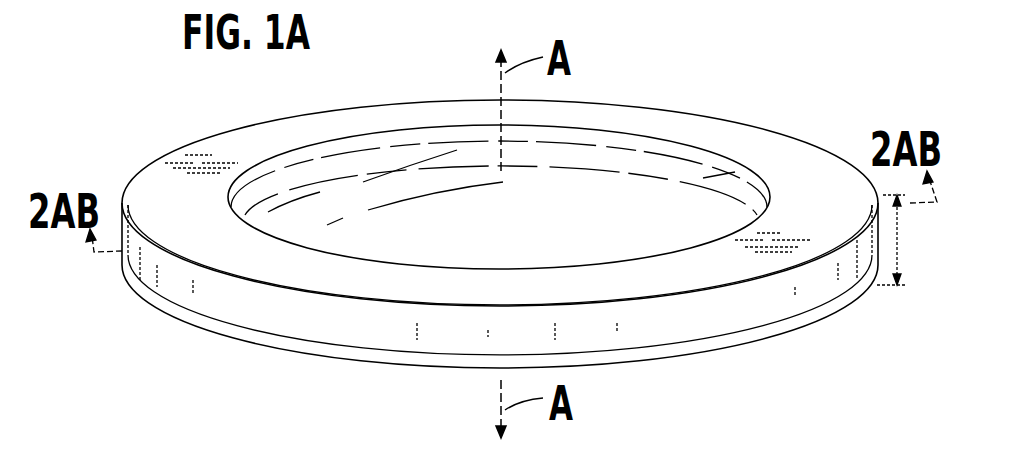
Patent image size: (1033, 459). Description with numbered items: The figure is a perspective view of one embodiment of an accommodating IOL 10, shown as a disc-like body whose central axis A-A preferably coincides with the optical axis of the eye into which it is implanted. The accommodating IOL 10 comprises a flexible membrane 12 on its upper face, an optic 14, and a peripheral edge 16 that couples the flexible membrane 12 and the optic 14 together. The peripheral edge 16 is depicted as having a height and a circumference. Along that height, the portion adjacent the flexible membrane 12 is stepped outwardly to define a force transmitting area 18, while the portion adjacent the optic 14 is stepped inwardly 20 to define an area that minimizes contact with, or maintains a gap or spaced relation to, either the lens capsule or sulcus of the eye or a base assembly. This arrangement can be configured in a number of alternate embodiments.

The accommodating IOL 10 is at (190, 123).
The flexible membrane 12 is at (668, 172).
The optic 14 is at (622, 369).
The peripheral edge 16 is at (904, 240).
The force transmitting area 18 is at (119, 212).
The inwardly stepped portion 20 is at (178, 322).